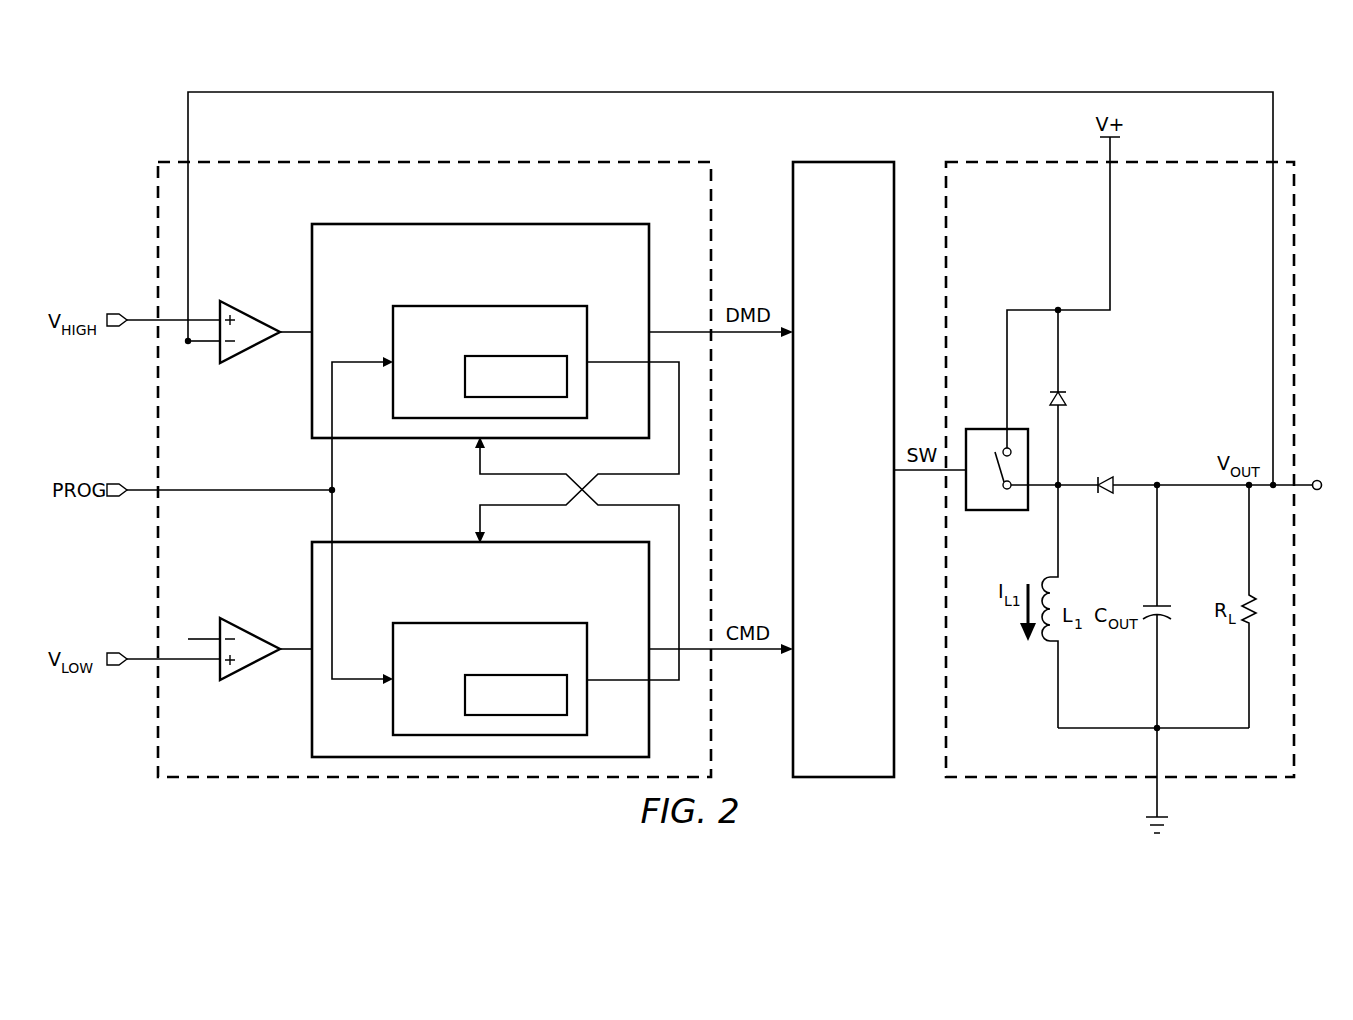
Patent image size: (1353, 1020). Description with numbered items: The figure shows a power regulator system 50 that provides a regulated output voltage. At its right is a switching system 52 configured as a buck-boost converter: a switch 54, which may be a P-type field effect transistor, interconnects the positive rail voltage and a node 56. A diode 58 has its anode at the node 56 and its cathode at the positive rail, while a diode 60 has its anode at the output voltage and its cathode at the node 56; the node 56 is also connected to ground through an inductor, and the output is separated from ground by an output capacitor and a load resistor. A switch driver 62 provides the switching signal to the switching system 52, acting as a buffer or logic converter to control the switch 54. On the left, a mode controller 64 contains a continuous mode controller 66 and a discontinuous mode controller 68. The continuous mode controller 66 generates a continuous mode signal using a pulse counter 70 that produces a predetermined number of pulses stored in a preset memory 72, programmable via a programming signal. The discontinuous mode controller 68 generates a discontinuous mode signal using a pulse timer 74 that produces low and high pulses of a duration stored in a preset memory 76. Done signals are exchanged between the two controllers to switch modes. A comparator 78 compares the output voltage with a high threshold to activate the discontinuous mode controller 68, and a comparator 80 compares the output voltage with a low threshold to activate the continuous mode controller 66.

The power regulator system 50 is at (140, 92).
The switching system 52 is at (1310, 712).
The switch 54 is at (1000, 511).
The node 56 is at (1082, 472).
The diode 58 is at (1070, 396).
The diode 60 is at (1112, 500).
The switch driver 62 is at (830, 534).
The mode controller 64 is at (150, 706).
The continuous mode controller 66 is at (301, 598).
The discontinuous mode controller 68 is at (300, 384).
The pulse counter 70 is at (381, 700).
The preset memory 72 is at (464, 692).
The pulse timer 74 is at (380, 339).
The preset memory 76 is at (464, 373).
The comparator 78 is at (249, 313).
The comparator 80 is at (250, 674).